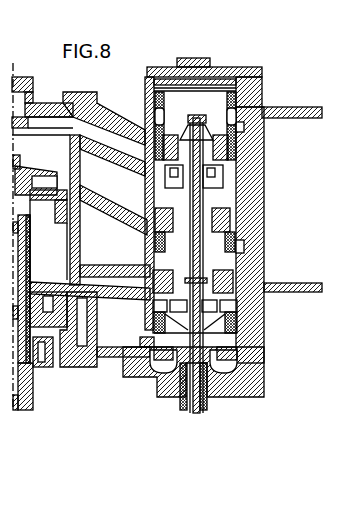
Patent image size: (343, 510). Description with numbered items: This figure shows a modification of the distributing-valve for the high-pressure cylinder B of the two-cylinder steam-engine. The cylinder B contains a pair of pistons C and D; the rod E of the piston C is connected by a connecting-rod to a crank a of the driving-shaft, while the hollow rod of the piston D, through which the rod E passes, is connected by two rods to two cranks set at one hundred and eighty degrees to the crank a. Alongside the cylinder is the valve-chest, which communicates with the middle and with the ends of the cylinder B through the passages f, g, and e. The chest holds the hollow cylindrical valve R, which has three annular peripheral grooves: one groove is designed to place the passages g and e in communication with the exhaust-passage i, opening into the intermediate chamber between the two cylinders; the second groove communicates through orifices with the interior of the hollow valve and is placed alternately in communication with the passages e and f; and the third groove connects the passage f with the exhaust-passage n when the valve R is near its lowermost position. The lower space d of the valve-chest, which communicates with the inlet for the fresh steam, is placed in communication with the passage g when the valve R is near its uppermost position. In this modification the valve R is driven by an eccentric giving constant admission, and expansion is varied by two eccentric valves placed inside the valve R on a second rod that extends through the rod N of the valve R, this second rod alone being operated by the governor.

The exhaust-passage n is at (130, 122).
The cylinder B is at (46, 181).
The piston C is at (36, 176).
The passage f is at (142, 168).
The passage e is at (147, 224).
The exhaust-passage i is at (147, 258).
The piston D is at (48, 235).
The crank a is at (90, 279).
The piston rod E is at (30, 402).
The passage g is at (73, 329).
The lower space of the valve-chest d is at (150, 340).
The hollow cylindrical valve R is at (195, 119).
The rod of the valve R N is at (205, 410).